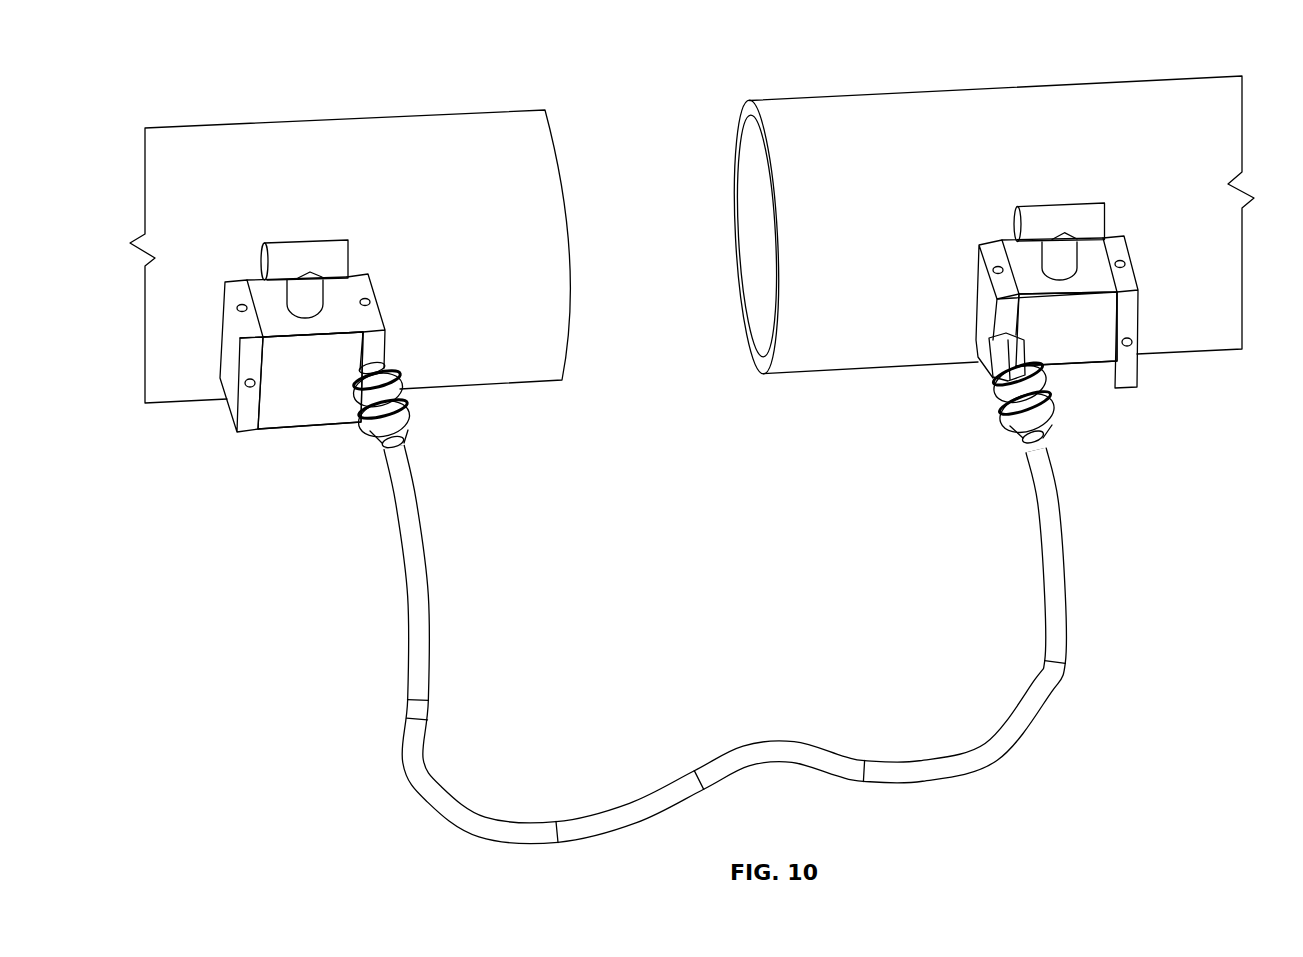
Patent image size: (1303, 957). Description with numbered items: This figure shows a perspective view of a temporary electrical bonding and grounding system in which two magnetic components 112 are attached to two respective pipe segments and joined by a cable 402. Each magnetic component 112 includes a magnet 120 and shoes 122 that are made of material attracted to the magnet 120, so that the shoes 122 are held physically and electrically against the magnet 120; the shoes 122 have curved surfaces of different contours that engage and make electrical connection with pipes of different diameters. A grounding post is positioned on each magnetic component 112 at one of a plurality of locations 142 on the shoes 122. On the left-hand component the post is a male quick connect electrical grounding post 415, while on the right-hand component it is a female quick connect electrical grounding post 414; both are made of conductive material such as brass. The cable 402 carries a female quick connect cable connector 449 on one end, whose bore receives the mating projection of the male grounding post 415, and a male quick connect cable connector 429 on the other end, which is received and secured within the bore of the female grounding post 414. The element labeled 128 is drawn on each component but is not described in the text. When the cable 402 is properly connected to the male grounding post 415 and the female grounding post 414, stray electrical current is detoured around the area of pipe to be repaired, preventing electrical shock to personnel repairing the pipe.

The magnetic component 112 is at (278, 417).
The magnet 120 is at (317, 372).
The shoe 122 is at (378, 300).
The transducer cylinder 128 is at (318, 247).
The location 142 is at (243, 387).
The cable 402 is at (484, 808).
The female quick connect electrical grounding post 414 is at (986, 362).
The male quick connect electrical grounding post 415 is at (390, 370).
The male quick connect cable connector 429 is at (1050, 407).
The female quick connect cable connector 449 is at (411, 417).